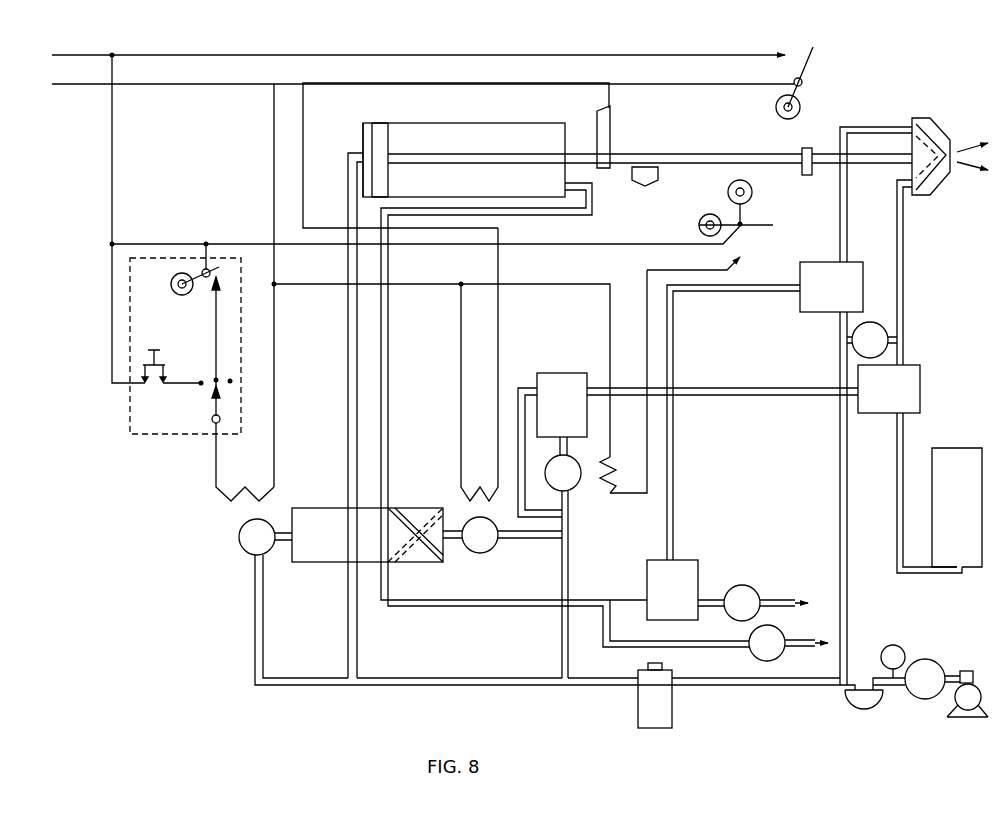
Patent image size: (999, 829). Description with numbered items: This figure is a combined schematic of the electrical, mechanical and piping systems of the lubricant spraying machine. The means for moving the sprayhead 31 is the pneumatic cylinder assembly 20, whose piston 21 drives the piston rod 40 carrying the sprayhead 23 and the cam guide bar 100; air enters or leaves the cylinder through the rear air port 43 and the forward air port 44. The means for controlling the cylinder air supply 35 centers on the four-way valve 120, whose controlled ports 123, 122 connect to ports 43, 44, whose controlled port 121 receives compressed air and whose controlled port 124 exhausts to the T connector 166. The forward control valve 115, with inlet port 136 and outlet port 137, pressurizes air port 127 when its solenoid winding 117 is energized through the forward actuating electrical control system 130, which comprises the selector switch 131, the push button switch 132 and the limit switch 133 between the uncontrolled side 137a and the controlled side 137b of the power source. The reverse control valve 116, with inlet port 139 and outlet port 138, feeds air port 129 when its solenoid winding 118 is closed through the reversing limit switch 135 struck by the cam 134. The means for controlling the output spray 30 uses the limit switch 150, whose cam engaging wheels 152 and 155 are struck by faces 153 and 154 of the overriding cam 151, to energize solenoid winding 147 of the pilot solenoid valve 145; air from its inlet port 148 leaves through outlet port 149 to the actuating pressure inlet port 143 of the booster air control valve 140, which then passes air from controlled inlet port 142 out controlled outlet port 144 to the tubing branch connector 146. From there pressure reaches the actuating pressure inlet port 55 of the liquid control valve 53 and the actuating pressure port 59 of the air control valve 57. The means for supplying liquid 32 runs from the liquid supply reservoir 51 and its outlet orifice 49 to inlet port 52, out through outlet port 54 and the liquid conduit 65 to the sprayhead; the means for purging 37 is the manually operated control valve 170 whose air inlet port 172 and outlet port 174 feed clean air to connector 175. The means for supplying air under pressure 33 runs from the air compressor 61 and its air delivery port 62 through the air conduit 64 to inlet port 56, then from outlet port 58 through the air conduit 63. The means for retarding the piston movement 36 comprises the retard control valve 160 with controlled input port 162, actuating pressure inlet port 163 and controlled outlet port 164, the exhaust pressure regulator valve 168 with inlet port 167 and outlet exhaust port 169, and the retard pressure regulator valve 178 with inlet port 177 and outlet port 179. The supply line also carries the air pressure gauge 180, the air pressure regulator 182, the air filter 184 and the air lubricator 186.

The controlled side of the source of electric power 137b is at (195, 53).
The uncontrolled side of the source of electric power 137a is at (202, 84).
The reversing limit switch 135 is at (803, 82).
The limit switch 133 is at (205, 270).
The forward actuating electrical control system 130 is at (177, 437).
The push button switch 132 is at (150, 357).
The selector switch 131 is at (212, 418).
The solenoid winding 117 is at (243, 490).
The solenoid winding 118 is at (473, 488).
The air port 43 is at (362, 155).
The piston 21 is at (367, 127).
The means for moving the sprayhead 31 is at (427, 122).
The pneumatic cylinder assembly 20 is at (488, 122).
The cam 134 is at (595, 132).
The piston rod 40 is at (630, 152).
The cam guide bar 100 is at (795, 172).
The sprayhead 23 is at (932, 127).
The air conduit 63 is at (849, 185).
The liquid conduit 65 is at (905, 220).
The air port 44 is at (566, 187).
The cam face 153 is at (657, 178).
The cam face 154 is at (638, 183).
The overriding cam 151 is at (645, 188).
The cam engaging wheel 155 is at (699, 225).
The cam engaging wheel 152 is at (752, 187).
The limit switch 150 is at (747, 223).
The outlet port 58 is at (840, 260).
The actuating pressure port 59 is at (800, 284).
The air control valve 57 is at (800, 312).
The inlet port 56 is at (840, 313).
The means for purging 37 is at (872, 320).
The air inlet port 172 is at (850, 345).
The manually operated control valve 170 is at (890, 337).
The outlet port 174 is at (893, 340).
The connector 175 is at (902, 340).
The outlet port 54 is at (904, 363).
The liquid control valve 53 is at (921, 377).
The actuating pressure inlet port 55 is at (855, 397).
The tubing branch connector 146 is at (675, 394).
The means for supplying air under pressure 33 is at (838, 443).
The inlet port 52 is at (896, 417).
The means for supplying liquid 32 is at (895, 475).
The liquid supply reservoir 51 is at (955, 447).
The outlet orifice 49 is at (955, 570).
The air conduit 64 is at (848, 563).
The booster air control valve 140 is at (553, 373).
The controlled inlet port 142 is at (537, 388).
The controlled outlet port 144 is at (588, 388).
The actuating pressure inlet port 143 is at (561, 440).
The outlet port 149 is at (567, 465).
The solenoid winding 147 is at (612, 480).
The pilot solenoid valve 145 is at (549, 483).
The means for controlling the output spray 30 is at (577, 486).
The inlet port 148 is at (568, 497).
The four-way valve 120 is at (313, 565).
The air port 127 is at (292, 530).
The controlled port 123 is at (352, 506).
The controlled port 122 is at (388, 506).
The outlet port 138 is at (457, 530).
The controlled port 121 is at (355, 564).
The controlled port 124 is at (386, 564).
The air port 129 is at (446, 540).
The forward control valve 115 is at (238, 528).
The means for controlling the cylinder air supply 35 is at (237, 542).
The inlet port 136 is at (256, 557).
The outlet port 137 is at (289, 548).
The reverse control valve 116 is at (485, 556).
The inlet port 139 is at (498, 538).
The means for retarding the piston movement 36 is at (645, 567).
The controlled input port 162 is at (646, 602).
The actuating pressure inlet port 163 is at (673, 560).
The retard control valve 160 is at (699, 565).
The controlled outlet port 164 is at (703, 597).
The exhaust pressure regulator valve 168 is at (751, 586).
The outlet exhaust port 169 is at (766, 600).
The T connector 166 is at (603, 608).
The inlet port 167 is at (723, 607).
The retard pressure regulator valve 178 is at (783, 632).
The inlet port 177 is at (749, 645).
The outlet port 179 is at (787, 650).
The air lubricator 186 is at (637, 693).
The air filter 184 is at (845, 700).
The air pressure gauge 180 is at (892, 645).
The air pressure regulator 182 is at (927, 658).
The air delivery port 62 is at (963, 671).
The air compressor 61 is at (955, 703).